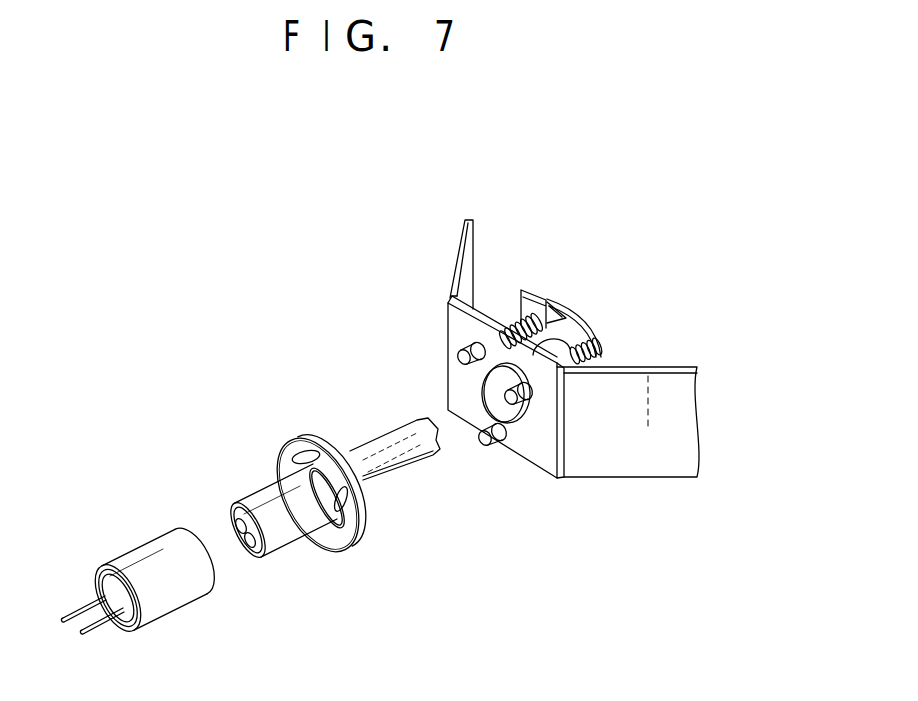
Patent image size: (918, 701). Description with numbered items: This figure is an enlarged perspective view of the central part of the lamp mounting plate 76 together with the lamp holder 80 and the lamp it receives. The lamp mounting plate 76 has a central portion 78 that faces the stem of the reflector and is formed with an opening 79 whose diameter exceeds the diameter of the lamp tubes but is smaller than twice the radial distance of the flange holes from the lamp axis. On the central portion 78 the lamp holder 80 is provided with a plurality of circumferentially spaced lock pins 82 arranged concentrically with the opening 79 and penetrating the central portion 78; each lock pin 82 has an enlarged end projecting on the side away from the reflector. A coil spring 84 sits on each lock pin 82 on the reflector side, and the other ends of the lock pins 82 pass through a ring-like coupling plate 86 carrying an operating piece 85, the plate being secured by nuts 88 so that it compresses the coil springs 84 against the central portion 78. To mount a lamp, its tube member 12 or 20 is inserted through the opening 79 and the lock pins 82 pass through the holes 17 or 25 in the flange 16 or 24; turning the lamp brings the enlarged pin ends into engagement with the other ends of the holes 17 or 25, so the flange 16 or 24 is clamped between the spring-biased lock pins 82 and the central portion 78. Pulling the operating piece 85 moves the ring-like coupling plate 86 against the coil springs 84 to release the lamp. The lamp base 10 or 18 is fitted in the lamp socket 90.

The base 10 is at (283, 547).
The base 18 is at (287, 541).
The tube member 12 is at (381, 447).
The tube member 20 is at (395, 449).
The flange 16 is at (326, 542).
The flange 24 is at (317, 495).
The hole 17 is at (294, 454).
The hole 25 is at (320, 480).
The lamp mounting plate 76 is at (642, 466).
The central portion 78 is at (452, 324).
The opening 79 is at (485, 392).
The lamp holder 80 is at (584, 299).
The lock pins 82 is at (462, 355).
The coil spring 84 is at (512, 326).
The operating piece 85 is at (529, 290).
The ring-like coupling plate 86 is at (574, 334).
The nuts 88 is at (604, 352).
The lamp socket 90 is at (159, 599).